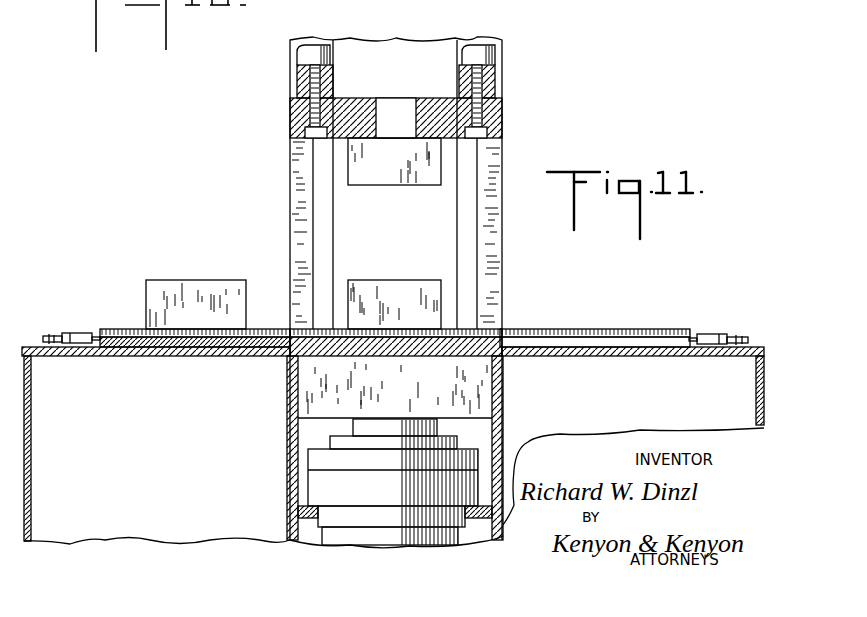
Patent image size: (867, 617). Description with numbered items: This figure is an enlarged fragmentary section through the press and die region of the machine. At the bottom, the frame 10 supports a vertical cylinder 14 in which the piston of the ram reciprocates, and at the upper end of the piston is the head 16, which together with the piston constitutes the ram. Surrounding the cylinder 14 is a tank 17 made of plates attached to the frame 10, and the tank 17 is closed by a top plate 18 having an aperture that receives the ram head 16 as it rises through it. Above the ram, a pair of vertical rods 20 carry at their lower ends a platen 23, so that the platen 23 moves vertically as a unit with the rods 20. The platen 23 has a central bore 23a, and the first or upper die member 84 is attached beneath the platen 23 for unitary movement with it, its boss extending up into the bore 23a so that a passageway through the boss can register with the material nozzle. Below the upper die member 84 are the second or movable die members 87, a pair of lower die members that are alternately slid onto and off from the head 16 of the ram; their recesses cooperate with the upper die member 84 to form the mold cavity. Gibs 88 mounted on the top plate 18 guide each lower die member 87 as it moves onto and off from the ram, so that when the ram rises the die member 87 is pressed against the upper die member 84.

The frame 10 is at (287, 437).
The vertical cylinder 14 is at (290, 497).
The head 16 is at (503, 395).
The tank 17 is at (32, 485).
The top plate 18 is at (180, 358).
The vertical rods 20 is at (300, 56).
The platen 23 is at (503, 121).
The central bore 23a is at (421, 140).
The first or upper die member 84 is at (378, 186).
The second or movable die members 87 is at (405, 283).
The gibs 88 is at (141, 328).